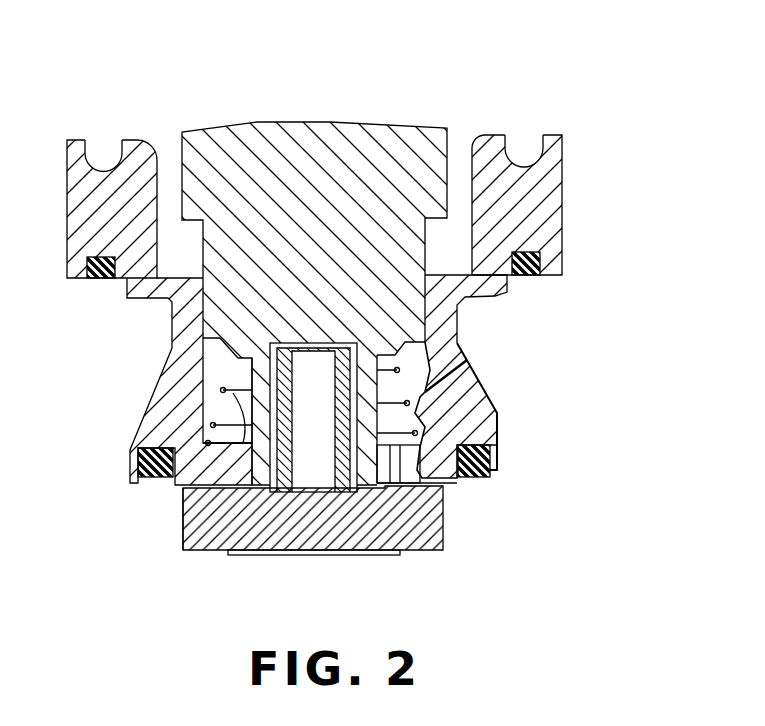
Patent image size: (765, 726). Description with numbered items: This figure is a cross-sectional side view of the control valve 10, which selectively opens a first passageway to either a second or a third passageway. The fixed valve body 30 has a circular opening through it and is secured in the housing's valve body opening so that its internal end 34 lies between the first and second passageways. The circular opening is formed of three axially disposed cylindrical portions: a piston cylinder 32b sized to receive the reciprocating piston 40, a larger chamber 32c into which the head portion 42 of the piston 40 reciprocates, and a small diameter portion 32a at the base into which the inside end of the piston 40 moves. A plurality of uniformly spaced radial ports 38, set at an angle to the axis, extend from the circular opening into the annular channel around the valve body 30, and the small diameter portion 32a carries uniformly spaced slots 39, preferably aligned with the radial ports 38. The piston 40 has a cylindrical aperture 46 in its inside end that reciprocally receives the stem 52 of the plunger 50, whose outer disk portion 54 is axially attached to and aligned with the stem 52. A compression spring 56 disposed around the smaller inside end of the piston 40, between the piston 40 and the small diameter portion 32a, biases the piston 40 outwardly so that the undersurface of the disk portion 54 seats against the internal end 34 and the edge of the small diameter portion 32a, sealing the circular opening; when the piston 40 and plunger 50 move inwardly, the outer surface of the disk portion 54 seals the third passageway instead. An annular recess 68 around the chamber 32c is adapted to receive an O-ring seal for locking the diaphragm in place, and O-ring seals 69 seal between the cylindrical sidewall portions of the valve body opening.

The control valve 10 is at (170, 103).
The fixed valve body 30 is at (533, 203).
The small diameter portion 32a is at (185, 527).
The piston cylinder 32b is at (217, 368).
The chamber 32c is at (468, 228).
The internal end 34 is at (450, 483).
The radial ports 38 is at (467, 408).
The slots 39 is at (395, 473).
The piston 40 is at (245, 271).
The head portion 42 is at (345, 143).
The cylindrical aperture 46 is at (393, 370).
The plunger 50 is at (213, 553).
The stem 52 is at (342, 465).
The disk portion 54 is at (312, 535).
The compression spring 56 is at (232, 400).
The annular recess 68 is at (522, 145).
The O-ring seals 69 is at (533, 277).